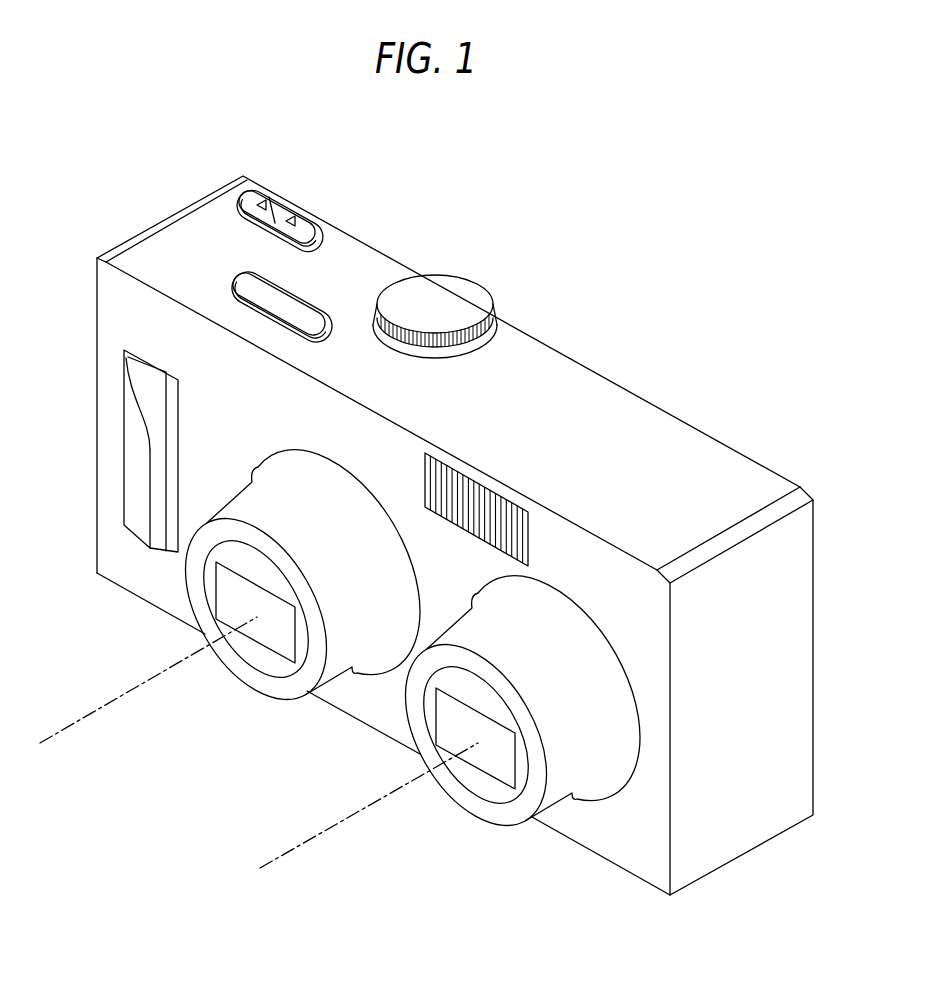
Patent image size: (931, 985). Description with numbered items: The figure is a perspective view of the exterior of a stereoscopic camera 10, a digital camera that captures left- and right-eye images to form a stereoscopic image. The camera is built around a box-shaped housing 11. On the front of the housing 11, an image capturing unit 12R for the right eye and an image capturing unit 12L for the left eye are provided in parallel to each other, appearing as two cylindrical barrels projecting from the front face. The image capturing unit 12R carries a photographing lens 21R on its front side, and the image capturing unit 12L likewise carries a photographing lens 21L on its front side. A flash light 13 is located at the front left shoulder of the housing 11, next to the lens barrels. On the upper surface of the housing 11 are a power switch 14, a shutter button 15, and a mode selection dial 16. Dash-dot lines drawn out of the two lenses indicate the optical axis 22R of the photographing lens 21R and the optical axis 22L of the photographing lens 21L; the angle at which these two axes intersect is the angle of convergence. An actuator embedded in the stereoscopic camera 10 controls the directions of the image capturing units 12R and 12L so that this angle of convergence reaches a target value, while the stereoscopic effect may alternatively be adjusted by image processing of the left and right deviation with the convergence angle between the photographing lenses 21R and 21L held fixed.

The stereoscopic camera 10 is at (663, 333).
The housing 11 is at (707, 455).
The image capturing unit for a right eye 12R is at (241, 683).
The image capturing unit for a left eye 12L is at (463, 806).
The flash light 13 is at (433, 492).
The power switch 14 is at (298, 215).
The shutter button 15 is at (298, 308).
The mode selection dial 16 is at (457, 295).
The photographing lens 21R is at (235, 600).
The photographing lens 21L is at (500, 762).
The optical axis 22R is at (70, 726).
The optical axis 22L is at (288, 853).